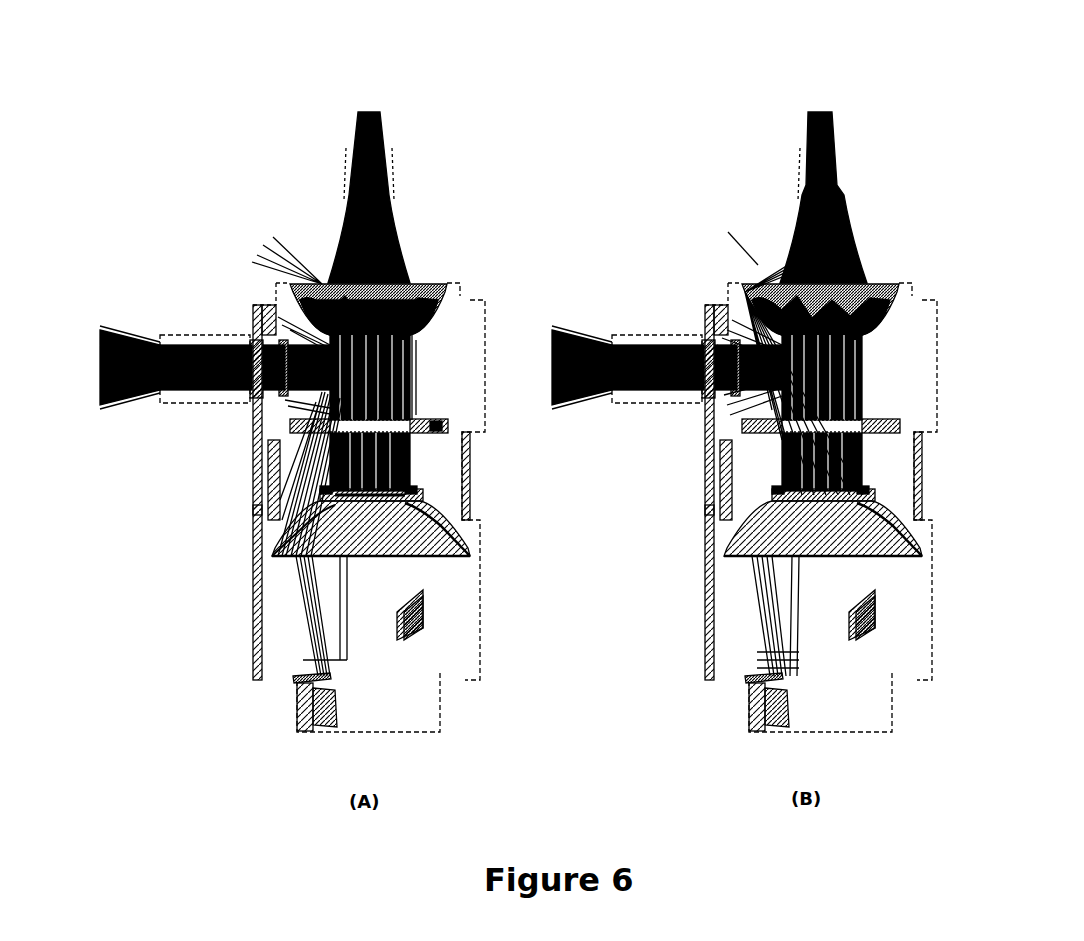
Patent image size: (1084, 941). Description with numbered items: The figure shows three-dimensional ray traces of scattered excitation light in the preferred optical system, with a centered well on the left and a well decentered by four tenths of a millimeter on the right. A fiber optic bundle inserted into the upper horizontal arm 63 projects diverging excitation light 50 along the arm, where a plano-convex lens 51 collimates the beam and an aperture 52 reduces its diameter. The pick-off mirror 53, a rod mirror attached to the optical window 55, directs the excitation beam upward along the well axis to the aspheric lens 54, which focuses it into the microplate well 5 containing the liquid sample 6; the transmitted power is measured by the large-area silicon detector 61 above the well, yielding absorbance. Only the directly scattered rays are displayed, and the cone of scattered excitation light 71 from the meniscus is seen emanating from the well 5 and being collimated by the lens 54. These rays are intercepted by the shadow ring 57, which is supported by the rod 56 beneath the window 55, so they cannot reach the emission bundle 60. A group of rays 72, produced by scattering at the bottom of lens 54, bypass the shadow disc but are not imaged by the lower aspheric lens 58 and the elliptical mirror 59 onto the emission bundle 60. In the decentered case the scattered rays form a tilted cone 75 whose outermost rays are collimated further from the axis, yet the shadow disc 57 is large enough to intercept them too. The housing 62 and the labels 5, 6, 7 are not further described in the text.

The large-area silicon detector 61 is at (357, 97).
The microplate well 5 is at (386, 170).
The liquid sample 6 is at (369, 197).
The light source 7 is at (369, 197).
The aspheric lens 54 is at (400, 302).
The pick-off mirror 53 is at (376, 368).
The cone of scattered excitation light 71 is at (408, 383).
The optical window 55 is at (447, 426).
The rod 56 is at (366, 463).
The shadow ring 57 is at (415, 490).
The lower aspheric lens 58 is at (430, 537).
The elliptical mirror 59 is at (394, 643).
The group of rays 72 is at (308, 610).
The excitation light 50 is at (116, 335).
The plano-convex lens 51 is at (245, 345).
The aperture 52 is at (262, 340).
The upper horizontal arm 63 is at (182, 407).
The optical housing 62 is at (256, 580).
The fiber optic bundle 60 is at (195, 650).
The tilted cone of scattered excitation rays 75 is at (846, 197).